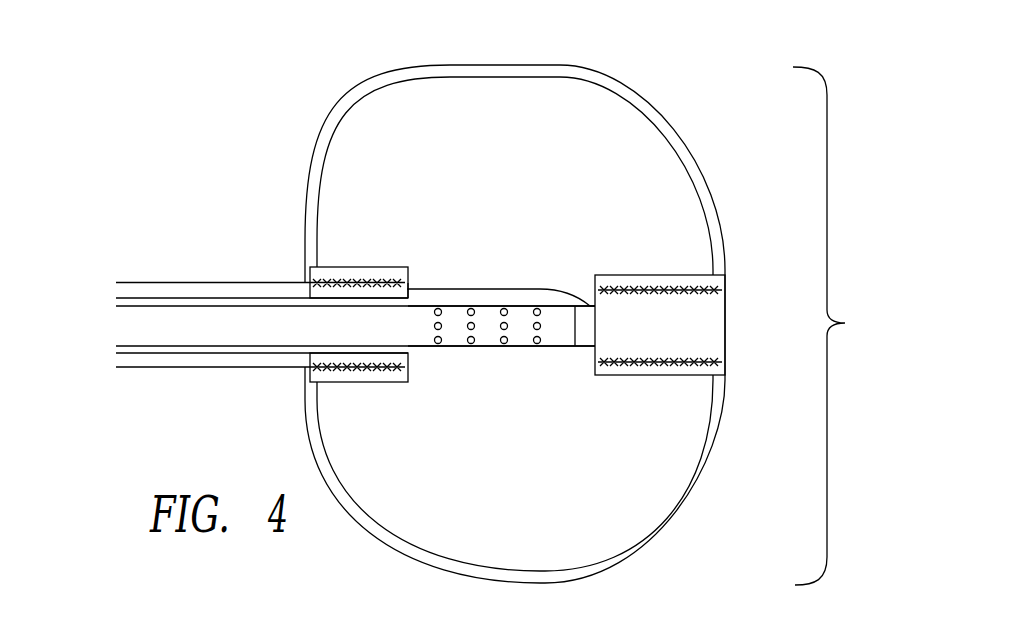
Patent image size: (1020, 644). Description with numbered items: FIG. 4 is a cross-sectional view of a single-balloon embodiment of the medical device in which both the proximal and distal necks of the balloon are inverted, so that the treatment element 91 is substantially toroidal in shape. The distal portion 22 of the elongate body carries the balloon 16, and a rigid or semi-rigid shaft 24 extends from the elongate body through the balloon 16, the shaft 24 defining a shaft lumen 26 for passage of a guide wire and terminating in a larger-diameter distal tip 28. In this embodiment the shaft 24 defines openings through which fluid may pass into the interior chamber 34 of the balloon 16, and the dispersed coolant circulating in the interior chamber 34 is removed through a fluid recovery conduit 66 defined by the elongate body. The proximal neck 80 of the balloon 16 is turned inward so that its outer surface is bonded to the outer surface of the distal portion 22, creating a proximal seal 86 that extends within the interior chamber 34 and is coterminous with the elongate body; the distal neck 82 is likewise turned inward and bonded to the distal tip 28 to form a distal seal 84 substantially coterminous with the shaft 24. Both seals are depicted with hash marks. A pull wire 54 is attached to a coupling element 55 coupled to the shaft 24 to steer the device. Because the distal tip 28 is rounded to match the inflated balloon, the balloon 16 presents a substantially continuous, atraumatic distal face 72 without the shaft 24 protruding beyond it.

The balloon 16 is at (357, 119).
The treatment element 91 is at (685, 86).
The distal portion of the elongate body 22 is at (155, 282).
The shaft lumen 26 is at (203, 320).
The proximal neck 80 is at (390, 266).
The fluid recovery conduit 66 is at (408, 351).
The proximal seal 86 is at (410, 283).
The pull wire 54 is at (467, 288).
The distal seal 84 is at (593, 304).
The distal neck 82 is at (626, 275).
The distal tip 28 is at (712, 305).
The shaft 24 is at (520, 348).
The coupling element 55 is at (584, 338).
The interior chamber 34 is at (513, 499).
The distal face 72 is at (834, 326).